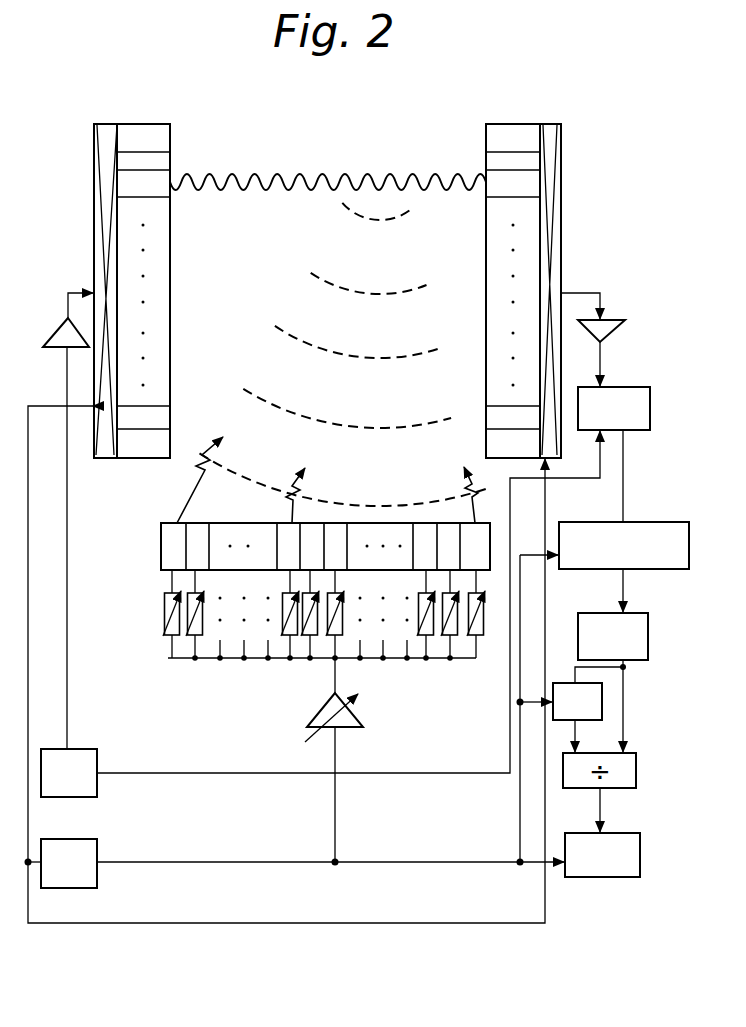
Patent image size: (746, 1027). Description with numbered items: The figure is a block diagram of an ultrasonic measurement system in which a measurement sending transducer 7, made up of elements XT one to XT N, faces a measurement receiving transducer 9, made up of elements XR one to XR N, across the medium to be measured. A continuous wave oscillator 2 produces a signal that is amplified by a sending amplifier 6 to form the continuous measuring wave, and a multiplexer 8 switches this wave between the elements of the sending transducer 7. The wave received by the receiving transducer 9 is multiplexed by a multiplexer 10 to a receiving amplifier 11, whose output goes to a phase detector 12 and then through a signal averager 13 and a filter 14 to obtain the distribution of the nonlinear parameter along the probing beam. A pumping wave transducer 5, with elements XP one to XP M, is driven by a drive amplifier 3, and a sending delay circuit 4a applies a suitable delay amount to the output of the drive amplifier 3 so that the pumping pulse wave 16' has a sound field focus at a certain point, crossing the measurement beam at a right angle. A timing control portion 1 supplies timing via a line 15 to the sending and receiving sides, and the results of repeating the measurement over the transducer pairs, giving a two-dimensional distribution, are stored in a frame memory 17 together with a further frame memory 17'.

The timing control portion 1 is at (82, 839).
The continuous wave oscillator 2 is at (82, 748).
The drive amplifier 3 is at (357, 717).
The sending delay circuit 4a is at (478, 633).
The pumping wave transducer 5 is at (490, 527).
The sending amplifier 6 is at (58, 320).
The measurement sending transducer 7 is at (165, 124).
The multiplexer 8 is at (101, 124).
The measurement receiving transducer 9 is at (505, 124).
The multiplexer 10 is at (552, 124).
The receiving amplifier 11 is at (613, 313).
The phase detector 12 is at (628, 386).
The signal averager 13 is at (648, 520).
The filter 14 is at (628, 613).
The timing signal line 15 is at (46, 614).
The pulse wave 16' is at (344, 354).
The frame memory 17 is at (561, 689).
The flow meter (FLM) 17' is at (608, 840).